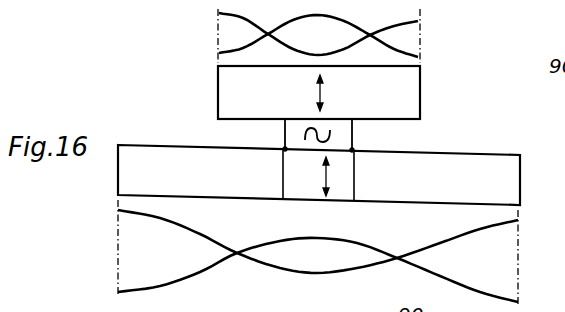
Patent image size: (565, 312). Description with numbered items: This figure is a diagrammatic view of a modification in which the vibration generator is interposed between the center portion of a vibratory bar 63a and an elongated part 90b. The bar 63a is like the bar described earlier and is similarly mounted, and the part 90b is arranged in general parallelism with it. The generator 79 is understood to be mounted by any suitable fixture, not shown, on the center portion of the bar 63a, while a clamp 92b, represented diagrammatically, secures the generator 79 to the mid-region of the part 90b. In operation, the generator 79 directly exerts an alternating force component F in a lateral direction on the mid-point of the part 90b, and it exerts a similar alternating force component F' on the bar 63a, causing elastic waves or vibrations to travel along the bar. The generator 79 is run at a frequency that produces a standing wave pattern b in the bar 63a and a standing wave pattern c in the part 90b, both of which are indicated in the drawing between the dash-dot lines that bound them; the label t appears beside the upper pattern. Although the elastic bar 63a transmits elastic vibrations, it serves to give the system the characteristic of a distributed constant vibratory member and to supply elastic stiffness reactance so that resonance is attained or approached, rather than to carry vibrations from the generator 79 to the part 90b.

The part 90b is at (226, 90).
The generator 79 is at (355, 138).
The vibratory bar 63a is at (479, 158).
The clamp 92b is at (283, 172).
The standing wave pattern c is at (405, 23).
The standing wave pattern b is at (470, 229).
The time axis t is at (158, 13).
The alternating force component F is at (334, 93).
The alternating force component F' is at (344, 198).